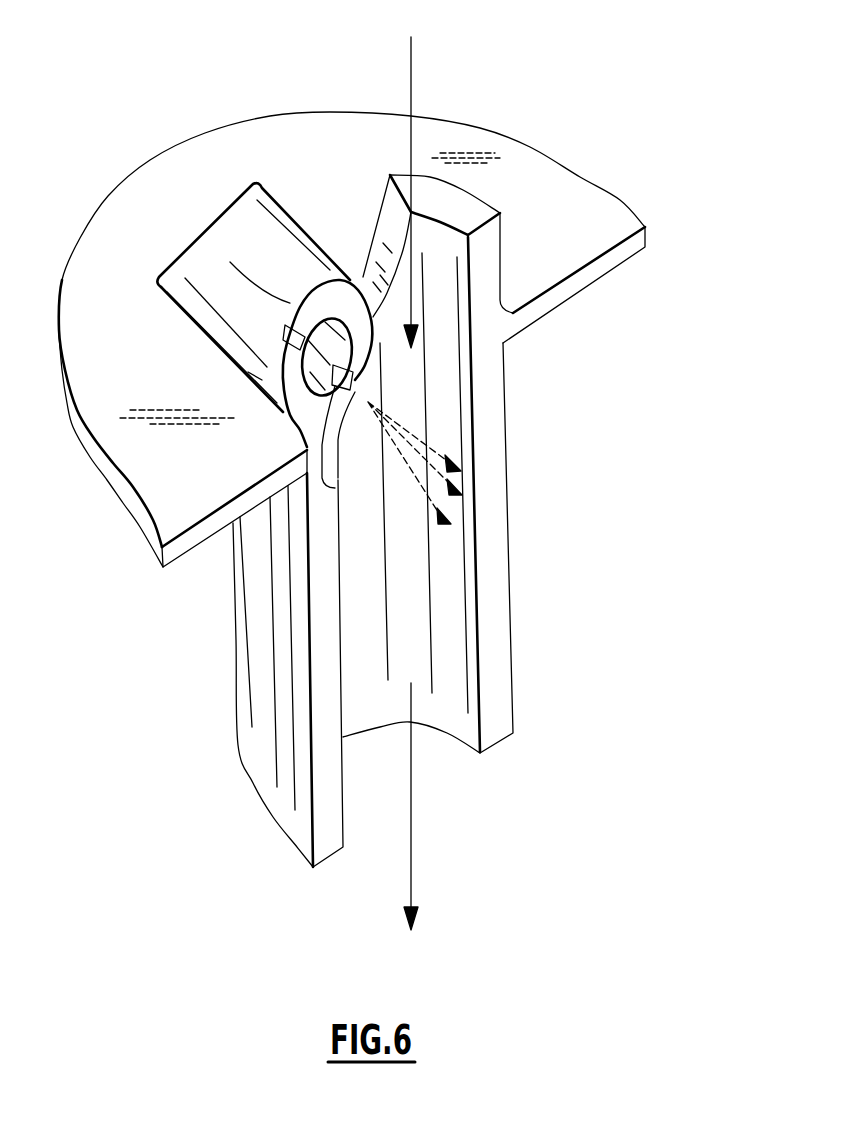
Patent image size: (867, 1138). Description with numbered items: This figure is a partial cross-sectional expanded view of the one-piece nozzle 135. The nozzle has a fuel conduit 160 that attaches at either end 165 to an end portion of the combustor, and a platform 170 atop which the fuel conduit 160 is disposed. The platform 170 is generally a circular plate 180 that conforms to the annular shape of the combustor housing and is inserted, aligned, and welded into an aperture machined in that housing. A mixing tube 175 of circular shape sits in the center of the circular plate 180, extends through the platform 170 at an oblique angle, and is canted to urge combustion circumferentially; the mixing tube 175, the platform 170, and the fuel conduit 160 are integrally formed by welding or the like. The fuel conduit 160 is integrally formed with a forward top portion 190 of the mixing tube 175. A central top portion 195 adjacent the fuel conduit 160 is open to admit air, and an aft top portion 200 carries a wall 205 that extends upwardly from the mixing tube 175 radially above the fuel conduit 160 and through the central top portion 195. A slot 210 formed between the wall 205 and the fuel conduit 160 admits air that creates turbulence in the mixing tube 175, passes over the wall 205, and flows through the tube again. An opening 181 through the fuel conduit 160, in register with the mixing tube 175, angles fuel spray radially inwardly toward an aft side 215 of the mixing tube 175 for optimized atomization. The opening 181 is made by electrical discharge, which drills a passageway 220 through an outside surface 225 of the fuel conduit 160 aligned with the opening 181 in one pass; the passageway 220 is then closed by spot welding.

The one-piece nozzle 135 is at (607, 112).
The fuel conduit 160 is at (253, 303).
The end 165 is at (248, 208).
The platform 170 is at (297, 133).
The mixing tube 175 is at (497, 547).
The circular plate 180 is at (553, 230).
The opening 181 is at (335, 488).
The forward top portion 190 is at (320, 413).
The central top portion 195 is at (368, 270).
The aft top portion 200 is at (500, 285).
The wall 205 is at (470, 217).
The slot 210 is at (343, 220).
The aft side 215 is at (440, 327).
The passageway 220 is at (253, 377).
The outside surface 225 is at (290, 303).